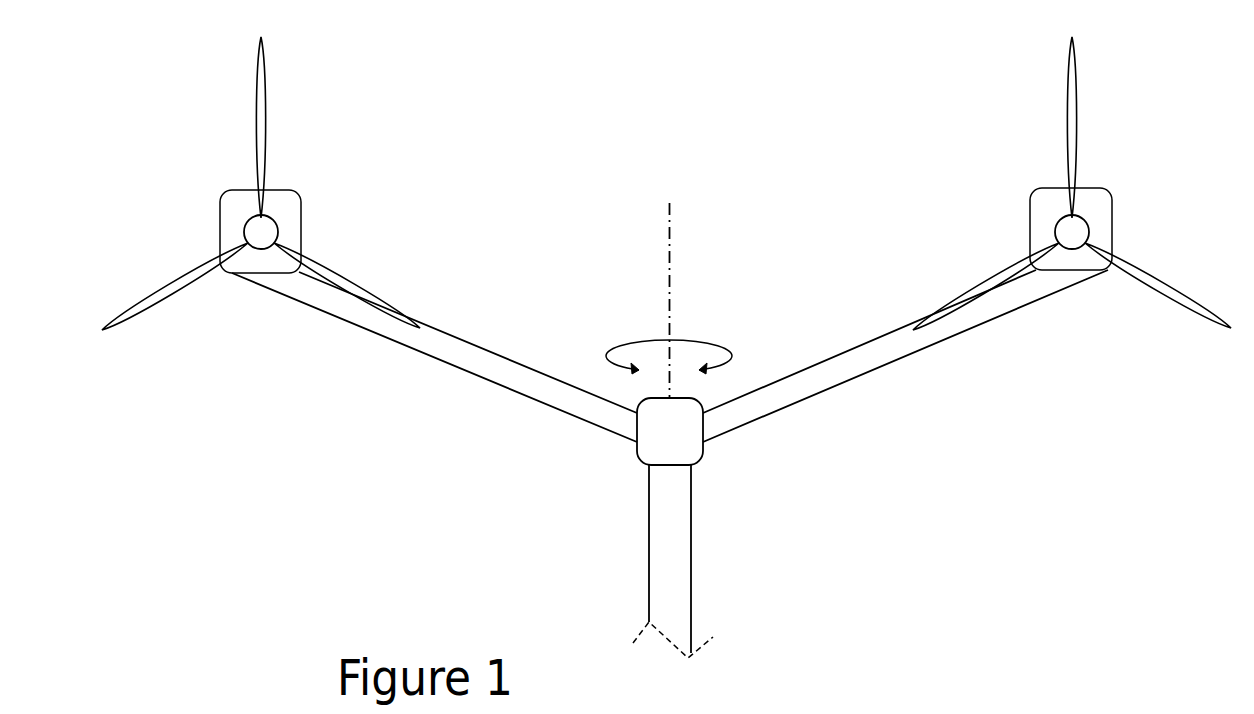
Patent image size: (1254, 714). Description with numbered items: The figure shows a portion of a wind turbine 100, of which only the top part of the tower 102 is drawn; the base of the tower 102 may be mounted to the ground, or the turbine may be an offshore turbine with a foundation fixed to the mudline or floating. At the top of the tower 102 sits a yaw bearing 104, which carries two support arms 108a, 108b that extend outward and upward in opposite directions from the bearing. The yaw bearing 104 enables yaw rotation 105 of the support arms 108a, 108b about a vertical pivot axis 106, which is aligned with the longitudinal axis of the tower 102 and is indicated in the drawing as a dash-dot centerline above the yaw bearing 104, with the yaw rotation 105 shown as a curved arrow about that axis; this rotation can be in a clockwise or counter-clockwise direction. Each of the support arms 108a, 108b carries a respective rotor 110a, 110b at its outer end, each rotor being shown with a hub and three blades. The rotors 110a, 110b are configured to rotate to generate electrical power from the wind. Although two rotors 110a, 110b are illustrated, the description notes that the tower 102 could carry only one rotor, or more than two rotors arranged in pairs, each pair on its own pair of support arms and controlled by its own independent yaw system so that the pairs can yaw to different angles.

The wind turbine 100 is at (546, 237).
The tower 102 is at (673, 580).
The yaw bearing 104 is at (675, 447).
The yaw rotation 105 is at (720, 343).
The vertical pivot axis 106 is at (669, 273).
The support arm 108a is at (482, 368).
The support arm 108b is at (835, 370).
The rotor 110a is at (168, 295).
The rotor 110b is at (1153, 287).